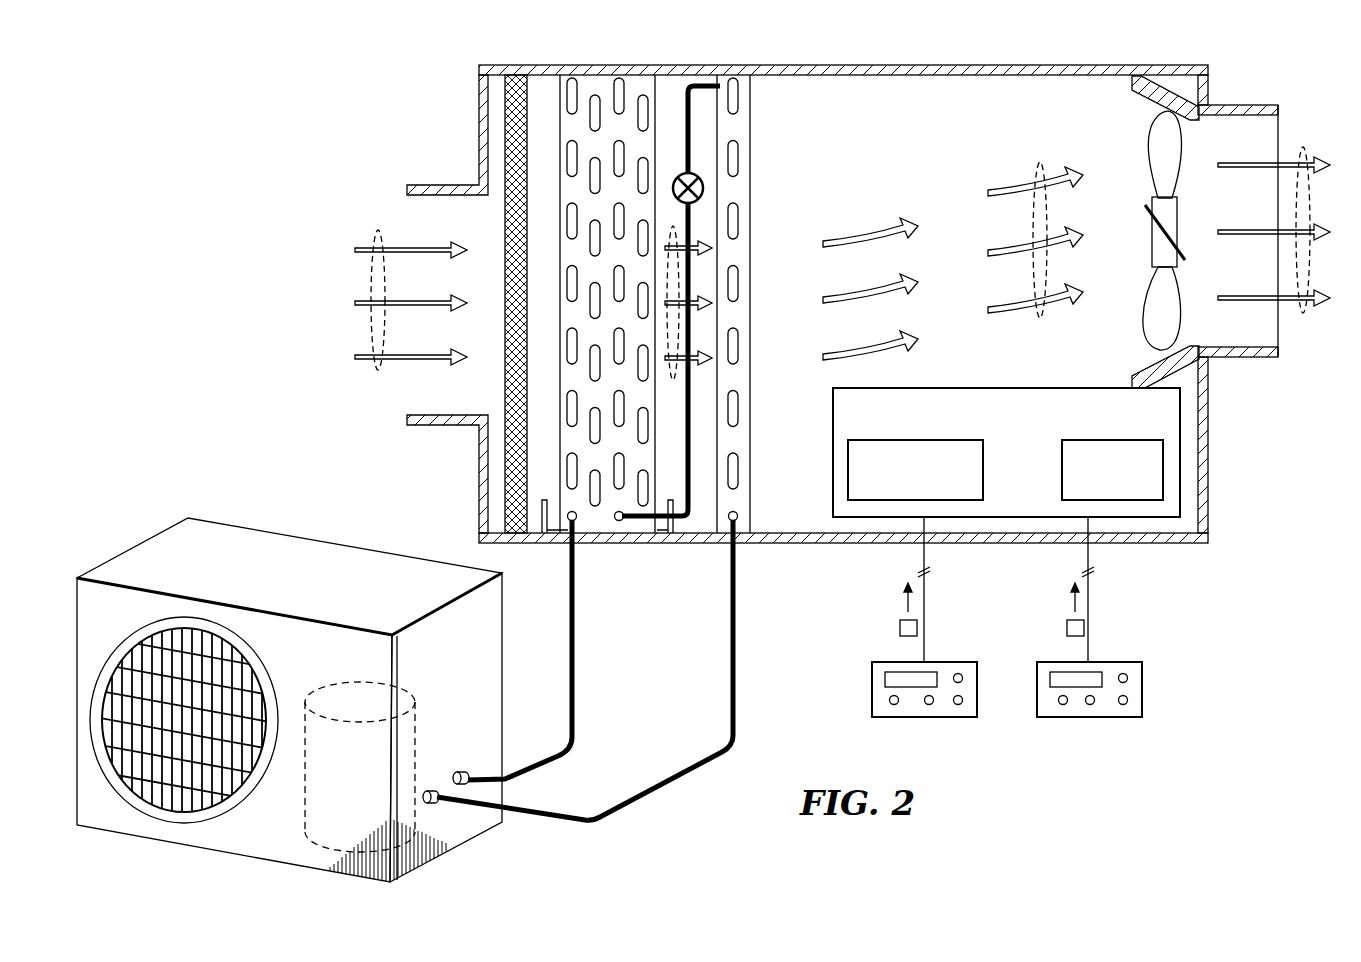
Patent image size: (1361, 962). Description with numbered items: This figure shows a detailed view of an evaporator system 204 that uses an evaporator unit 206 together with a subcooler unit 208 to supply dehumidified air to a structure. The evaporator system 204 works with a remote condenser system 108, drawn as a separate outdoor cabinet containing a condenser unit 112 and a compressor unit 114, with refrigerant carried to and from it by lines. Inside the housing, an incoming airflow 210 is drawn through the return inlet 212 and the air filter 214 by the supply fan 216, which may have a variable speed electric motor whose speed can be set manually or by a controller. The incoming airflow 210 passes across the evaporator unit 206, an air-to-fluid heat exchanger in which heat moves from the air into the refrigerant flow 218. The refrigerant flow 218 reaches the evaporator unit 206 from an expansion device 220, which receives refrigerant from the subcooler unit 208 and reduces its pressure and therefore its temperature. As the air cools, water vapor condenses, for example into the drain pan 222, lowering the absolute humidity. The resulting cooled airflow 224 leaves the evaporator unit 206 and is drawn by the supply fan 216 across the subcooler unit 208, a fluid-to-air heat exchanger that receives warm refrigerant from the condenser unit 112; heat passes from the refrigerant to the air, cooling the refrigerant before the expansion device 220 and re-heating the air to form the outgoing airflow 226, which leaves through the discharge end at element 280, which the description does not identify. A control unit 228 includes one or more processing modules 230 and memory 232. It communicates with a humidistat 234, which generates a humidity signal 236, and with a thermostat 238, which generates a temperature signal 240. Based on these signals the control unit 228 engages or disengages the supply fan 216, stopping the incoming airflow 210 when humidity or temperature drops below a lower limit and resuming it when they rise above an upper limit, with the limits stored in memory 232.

The remote condenser system 108 is at (160, 524).
The condenser unit 112 is at (147, 770).
The compressor unit 114 is at (415, 735).
The evaporator system 204 is at (472, 103).
The evaporator unit 206 is at (607, 85).
The subcooler unit 208 is at (738, 128).
The incoming airflow 210 is at (378, 373).
The return inlet 212 is at (435, 183).
The air filter 214 is at (505, 230).
The supply fan 216 is at (1145, 139).
The refrigerant flow 218 is at (573, 560).
The expansion device 220 is at (703, 190).
The drain pan 222 is at (543, 534).
The cooled airflow 224 is at (675, 228).
The outgoing airflow 226 is at (1040, 318).
The control unit 228 is at (1140, 424).
The processing module 230 is at (983, 475).
The memory 232 is at (1062, 468).
The humidistat 234 is at (872, 692).
The signal 236 is at (900, 626).
The thermostat 238 is at (1142, 692).
The signal 240 is at (1067, 626).
The outlet duct 280 is at (1247, 105).